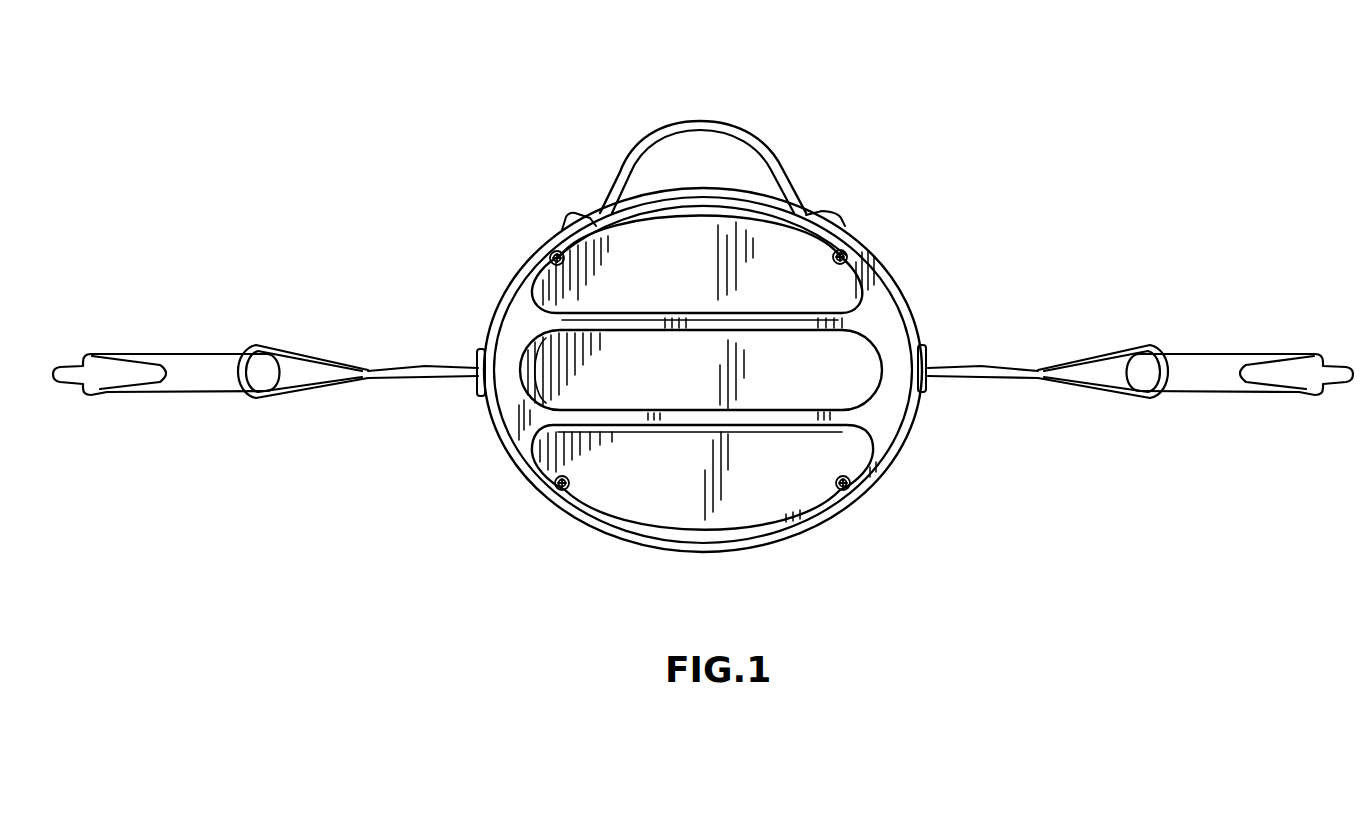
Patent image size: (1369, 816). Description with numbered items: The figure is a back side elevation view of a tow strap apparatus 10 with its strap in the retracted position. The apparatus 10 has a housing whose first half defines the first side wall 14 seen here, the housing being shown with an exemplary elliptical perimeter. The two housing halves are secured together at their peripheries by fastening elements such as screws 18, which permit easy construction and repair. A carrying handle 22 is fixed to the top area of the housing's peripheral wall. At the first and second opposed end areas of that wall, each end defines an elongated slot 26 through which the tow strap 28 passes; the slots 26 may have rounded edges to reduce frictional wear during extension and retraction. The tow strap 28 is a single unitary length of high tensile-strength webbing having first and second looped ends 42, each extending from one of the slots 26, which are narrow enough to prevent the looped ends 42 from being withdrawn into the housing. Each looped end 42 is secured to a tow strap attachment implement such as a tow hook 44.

The tow strap apparatus 10 is at (913, 172).
The first side wall 14 is at (700, 385).
The screws 18 is at (551, 253).
The carrying handle 22 is at (782, 153).
The slot 26 is at (949, 304).
The tow strap 28 is at (424, 379).
The looped ends 42 is at (290, 347).
The tow hook 44 is at (155, 353).